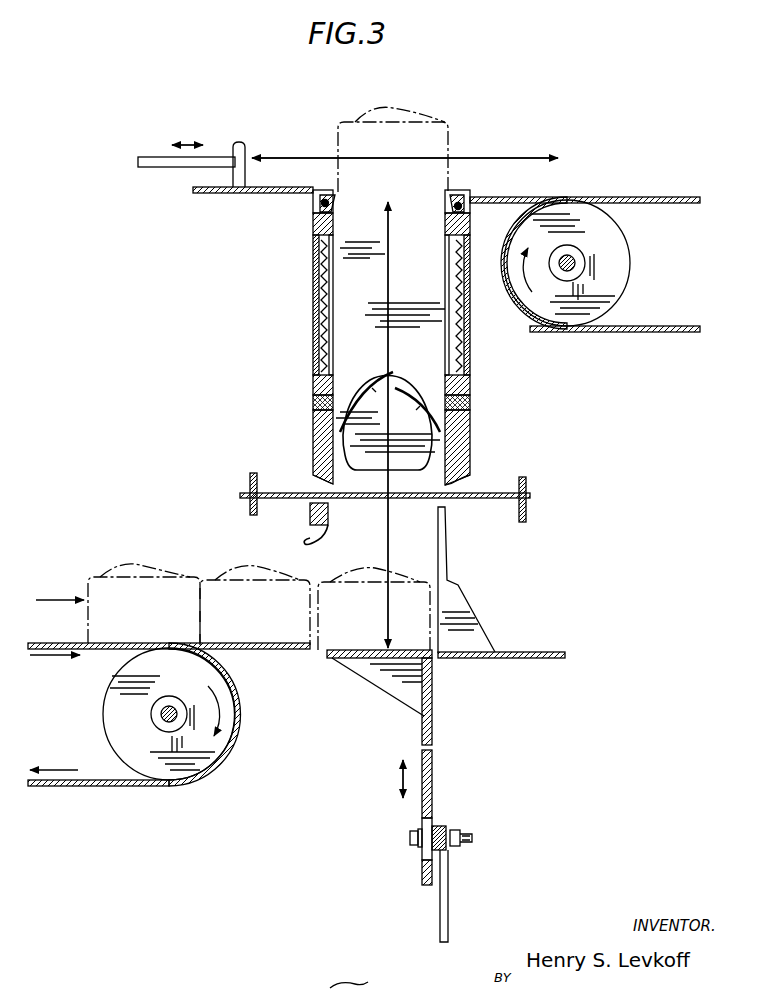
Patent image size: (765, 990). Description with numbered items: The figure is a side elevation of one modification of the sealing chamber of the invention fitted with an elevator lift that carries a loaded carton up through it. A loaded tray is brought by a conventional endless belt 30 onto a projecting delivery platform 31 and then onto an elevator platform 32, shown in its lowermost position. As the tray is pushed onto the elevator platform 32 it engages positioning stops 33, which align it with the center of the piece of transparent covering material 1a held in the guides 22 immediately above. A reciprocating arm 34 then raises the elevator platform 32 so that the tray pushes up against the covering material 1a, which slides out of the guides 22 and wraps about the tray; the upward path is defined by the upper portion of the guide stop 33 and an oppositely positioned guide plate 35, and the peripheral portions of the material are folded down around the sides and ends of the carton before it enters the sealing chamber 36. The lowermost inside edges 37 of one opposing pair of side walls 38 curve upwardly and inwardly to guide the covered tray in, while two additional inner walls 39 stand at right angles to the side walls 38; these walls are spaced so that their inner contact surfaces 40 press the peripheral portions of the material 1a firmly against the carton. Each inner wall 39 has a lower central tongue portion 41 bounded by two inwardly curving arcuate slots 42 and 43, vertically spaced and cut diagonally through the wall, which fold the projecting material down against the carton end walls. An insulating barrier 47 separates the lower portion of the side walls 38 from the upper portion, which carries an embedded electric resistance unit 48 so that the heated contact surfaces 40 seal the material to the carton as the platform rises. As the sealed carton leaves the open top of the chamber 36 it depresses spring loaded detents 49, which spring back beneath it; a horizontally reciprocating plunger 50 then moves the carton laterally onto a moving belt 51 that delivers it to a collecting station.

The piece of transparent covering material 1a is at (384, 500).
The guides 22 is at (250, 484).
The endless belt 30 is at (106, 655).
The projecting delivery platform 31 is at (286, 652).
The elevator platform 32 is at (353, 662).
The positioning stops 33 is at (450, 604).
The reciprocating arm 34 is at (446, 898).
The guide plate 35 is at (320, 532).
The sealing chamber 36 is at (310, 360).
The lowermost inside edges 37 is at (327, 478).
The side walls 38 is at (312, 445).
The inner walls 39 is at (422, 281).
The inner contact surfaces 40 is at (335, 325).
The lower central tongue portion 41 is at (408, 455).
The arcuate slot 42 is at (432, 385).
The arcuate slot 43 is at (370, 390).
The insulating barrier 47 is at (312, 405).
The electric resistance unit 48 is at (320, 272).
The spring loaded detents 49 is at (330, 203).
The horizontally reciprocating plunger 50 is at (241, 143).
The moving belt 51 is at (628, 197).